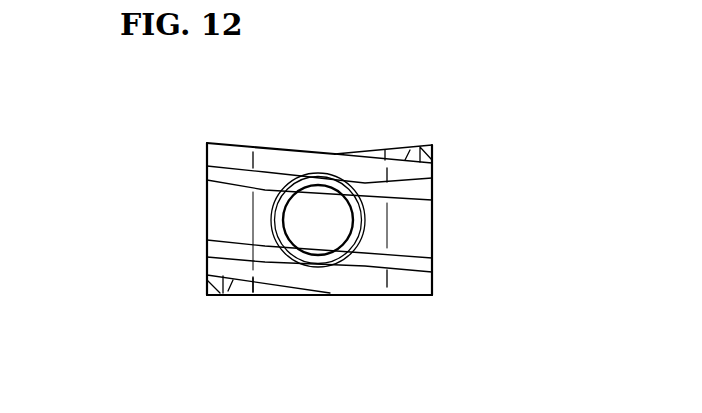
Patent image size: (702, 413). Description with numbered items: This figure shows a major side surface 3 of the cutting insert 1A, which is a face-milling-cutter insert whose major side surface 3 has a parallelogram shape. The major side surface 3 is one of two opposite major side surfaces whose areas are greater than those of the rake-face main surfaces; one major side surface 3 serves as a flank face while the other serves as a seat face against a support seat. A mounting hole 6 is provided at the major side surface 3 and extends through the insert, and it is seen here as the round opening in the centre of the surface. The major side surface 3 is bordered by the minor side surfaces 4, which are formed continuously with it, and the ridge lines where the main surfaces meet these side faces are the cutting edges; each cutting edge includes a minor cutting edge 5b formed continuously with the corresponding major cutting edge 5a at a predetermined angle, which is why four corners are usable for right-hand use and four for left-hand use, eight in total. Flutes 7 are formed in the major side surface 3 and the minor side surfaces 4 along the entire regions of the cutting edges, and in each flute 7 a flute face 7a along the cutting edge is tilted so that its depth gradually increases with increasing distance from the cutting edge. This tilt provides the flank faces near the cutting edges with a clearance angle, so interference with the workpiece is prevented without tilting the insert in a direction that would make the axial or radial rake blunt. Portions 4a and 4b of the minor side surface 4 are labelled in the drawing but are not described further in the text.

The cutting insert 1A is at (436, 206).
The major side surface 3 is at (264, 233).
The minor side surface 4 is at (113, 218).
The upper side face portion 4a is at (232, 208).
The lower side face portion 4b is at (230, 223).
The major cutting edge 5a is at (277, 151).
The minor cutting edge 5b is at (228, 144).
The mounting hole 6 is at (323, 203).
The flute 7 is at (404, 181).
The flute face 7a is at (218, 157).